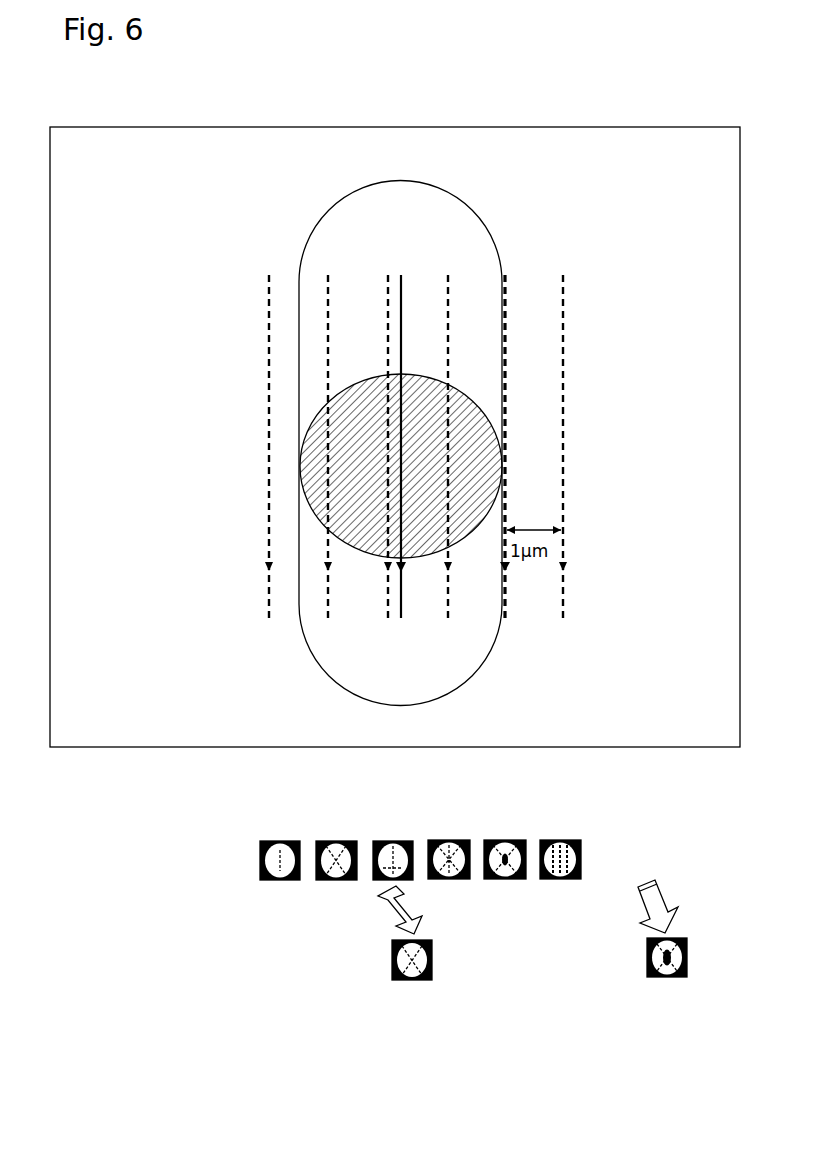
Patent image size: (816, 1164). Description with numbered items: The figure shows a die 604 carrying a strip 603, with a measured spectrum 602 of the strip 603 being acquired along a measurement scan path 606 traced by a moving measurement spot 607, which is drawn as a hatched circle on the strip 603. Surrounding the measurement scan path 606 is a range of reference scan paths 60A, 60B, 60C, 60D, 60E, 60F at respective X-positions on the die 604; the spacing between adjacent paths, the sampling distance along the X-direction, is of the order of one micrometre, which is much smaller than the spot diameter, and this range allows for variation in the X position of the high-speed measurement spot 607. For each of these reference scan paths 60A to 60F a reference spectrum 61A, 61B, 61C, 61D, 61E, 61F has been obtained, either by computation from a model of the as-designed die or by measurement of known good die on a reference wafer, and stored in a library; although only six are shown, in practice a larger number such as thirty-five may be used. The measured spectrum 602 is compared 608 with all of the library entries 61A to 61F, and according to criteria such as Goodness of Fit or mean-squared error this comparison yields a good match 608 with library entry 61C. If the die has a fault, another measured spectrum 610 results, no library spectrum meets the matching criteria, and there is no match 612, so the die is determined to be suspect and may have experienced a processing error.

The die 604 is at (205, 126).
The strip 603 is at (306, 651).
The moving measurement spot 607 is at (456, 546).
The measurement scan path 606 is at (401, 275).
The scan path 60A is at (268, 275).
The scan path 60B is at (327, 275).
The scan path 60C is at (386, 275).
The scan path 60D is at (447, 275).
The scan path 60E is at (504, 275).
The scan path 60F is at (562, 275).
The reference spectrum 61A is at (270, 842).
The reference spectrum 61B is at (330, 842).
The reference spectrum 61C is at (390, 842).
The reference spectrum 61D is at (447, 840).
The reference spectrum 61E is at (505, 840).
The reference spectrum 61F is at (562, 840).
The comparison / good match 608 is at (390, 913).
The measured spectrum 602 is at (392, 977).
The no match 612 is at (640, 912).
The measured spectrum (faulty die) 610 is at (647, 970).